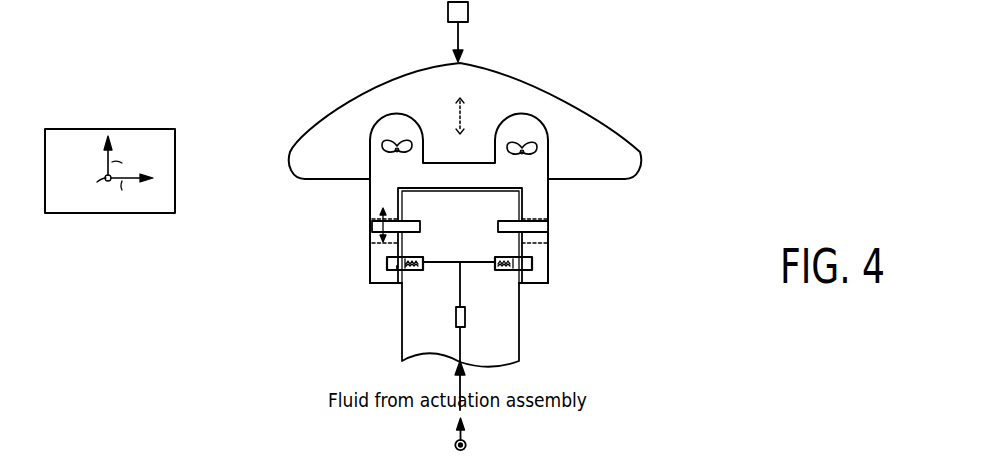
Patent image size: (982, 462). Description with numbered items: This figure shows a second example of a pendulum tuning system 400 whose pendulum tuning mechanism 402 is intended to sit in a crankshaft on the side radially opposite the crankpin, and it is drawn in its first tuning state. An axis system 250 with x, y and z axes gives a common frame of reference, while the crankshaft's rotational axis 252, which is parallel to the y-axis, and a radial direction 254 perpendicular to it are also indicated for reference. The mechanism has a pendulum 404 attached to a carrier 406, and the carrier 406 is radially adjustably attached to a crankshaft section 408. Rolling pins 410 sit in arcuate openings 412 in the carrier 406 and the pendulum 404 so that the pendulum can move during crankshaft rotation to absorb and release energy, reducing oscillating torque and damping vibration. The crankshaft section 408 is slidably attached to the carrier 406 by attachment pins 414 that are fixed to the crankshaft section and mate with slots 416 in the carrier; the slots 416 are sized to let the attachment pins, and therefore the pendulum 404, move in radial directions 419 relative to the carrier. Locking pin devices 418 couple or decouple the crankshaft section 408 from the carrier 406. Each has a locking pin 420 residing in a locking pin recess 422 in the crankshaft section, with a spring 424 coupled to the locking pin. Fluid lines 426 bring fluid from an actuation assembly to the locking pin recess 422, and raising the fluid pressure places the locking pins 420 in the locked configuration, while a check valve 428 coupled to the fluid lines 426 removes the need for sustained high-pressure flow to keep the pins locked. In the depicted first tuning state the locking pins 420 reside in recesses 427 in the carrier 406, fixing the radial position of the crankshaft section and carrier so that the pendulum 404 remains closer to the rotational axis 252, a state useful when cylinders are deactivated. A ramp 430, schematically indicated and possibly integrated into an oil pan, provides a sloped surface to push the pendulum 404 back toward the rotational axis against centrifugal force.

The pendulum tuning system 400 is at (666, 81).
The pendulum tuning mechanism 402 is at (592, 250).
The pendulum 404 is at (553, 100).
The carrier 406 is at (538, 190).
The crankshaft section 408 is at (493, 313).
The rolling pin 410 is at (520, 155).
The opening 412 is at (532, 154).
The attachment pin 414 is at (410, 225).
The slot 416 is at (362, 240).
The locking pin device 418 is at (380, 216).
The radial direction 419 is at (462, 129).
The locking pin 420 is at (395, 269).
The locking pin recess 422 is at (409, 276).
The spring 424 is at (420, 257).
The fluid line 426 is at (462, 269).
The recess 427 is at (387, 261).
The check valve 428 is at (465, 318).
The ramp 430 is at (447, 12).
The axis system 250 is at (108, 129).
The rotational axis 252 is at (455, 445).
The radial direction 254 is at (464, 433).